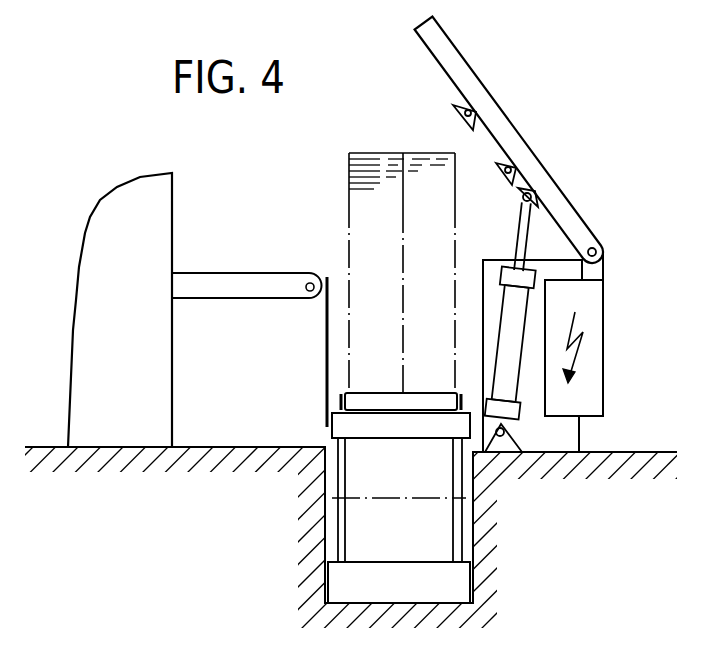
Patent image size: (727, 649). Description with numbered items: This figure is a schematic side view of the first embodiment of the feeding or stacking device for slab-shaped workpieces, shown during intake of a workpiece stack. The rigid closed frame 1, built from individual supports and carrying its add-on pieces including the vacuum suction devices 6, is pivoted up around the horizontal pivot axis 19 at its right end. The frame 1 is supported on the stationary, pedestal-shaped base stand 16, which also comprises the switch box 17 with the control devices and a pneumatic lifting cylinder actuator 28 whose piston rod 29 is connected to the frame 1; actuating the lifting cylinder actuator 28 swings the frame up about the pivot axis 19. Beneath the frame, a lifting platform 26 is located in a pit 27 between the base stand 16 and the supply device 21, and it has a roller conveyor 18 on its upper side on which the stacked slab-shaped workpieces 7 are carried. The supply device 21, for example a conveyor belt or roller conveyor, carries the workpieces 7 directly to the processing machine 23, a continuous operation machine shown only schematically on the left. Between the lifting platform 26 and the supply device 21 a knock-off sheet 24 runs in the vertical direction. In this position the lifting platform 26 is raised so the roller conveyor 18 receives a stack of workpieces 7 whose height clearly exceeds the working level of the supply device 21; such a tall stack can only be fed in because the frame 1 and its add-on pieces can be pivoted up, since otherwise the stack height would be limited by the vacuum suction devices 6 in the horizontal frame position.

The frame 1 is at (448, 57).
The vacuum suction devices 6 is at (487, 93).
The slab-shaped workpieces 7 is at (380, 167).
The base stand 16 is at (568, 435).
The switch box 17 is at (592, 358).
The roller conveyor 18 is at (359, 398).
The horizontal pivot axis 19 is at (597, 246).
The supply device 21 is at (244, 282).
The processing machine 23 is at (163, 357).
The knock-off sheet 24 is at (323, 345).
The lifting platform 26 is at (458, 486).
The pit 27 is at (475, 542).
The lifting cylinder actuator 28 is at (518, 303).
The piston rod 29 is at (517, 226).